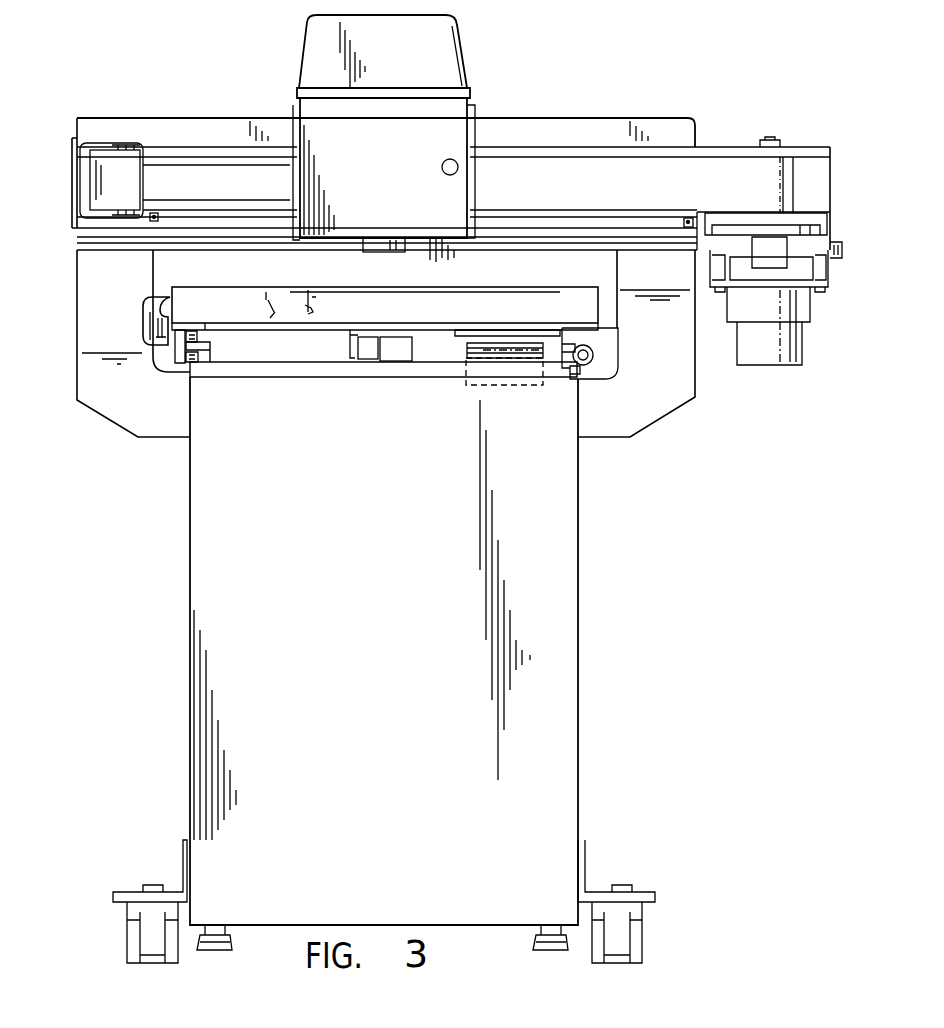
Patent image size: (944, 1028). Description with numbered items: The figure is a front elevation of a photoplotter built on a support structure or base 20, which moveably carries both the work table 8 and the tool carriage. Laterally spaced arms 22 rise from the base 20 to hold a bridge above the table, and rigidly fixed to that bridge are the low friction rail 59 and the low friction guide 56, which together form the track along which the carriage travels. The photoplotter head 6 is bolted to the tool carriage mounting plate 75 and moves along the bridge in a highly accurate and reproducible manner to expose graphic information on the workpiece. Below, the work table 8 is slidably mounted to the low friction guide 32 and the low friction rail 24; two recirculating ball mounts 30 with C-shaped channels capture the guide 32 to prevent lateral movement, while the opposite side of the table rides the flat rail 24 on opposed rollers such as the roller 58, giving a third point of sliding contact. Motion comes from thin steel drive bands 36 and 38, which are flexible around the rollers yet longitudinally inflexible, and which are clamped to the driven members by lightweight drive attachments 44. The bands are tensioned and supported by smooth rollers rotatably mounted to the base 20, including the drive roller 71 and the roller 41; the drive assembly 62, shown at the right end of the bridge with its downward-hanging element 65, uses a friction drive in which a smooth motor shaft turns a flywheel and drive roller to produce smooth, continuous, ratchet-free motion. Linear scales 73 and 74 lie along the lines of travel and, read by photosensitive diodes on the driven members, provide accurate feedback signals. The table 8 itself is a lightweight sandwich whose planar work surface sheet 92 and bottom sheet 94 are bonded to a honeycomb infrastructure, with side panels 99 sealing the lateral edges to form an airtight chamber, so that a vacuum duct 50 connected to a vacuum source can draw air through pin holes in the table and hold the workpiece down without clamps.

The photoplotter head 6 is at (320, 48).
The work table 8 is at (524, 302).
The base 20 is at (560, 470).
The arms 22 is at (77, 333).
The low friction rail 24 is at (207, 343).
The recirculating ball mounts 30 is at (605, 345).
The low friction guide 32 is at (594, 355).
The drive band 36 is at (206, 165).
The drive band 38 is at (478, 351).
The roller 41 is at (137, 150).
The drive attachment 44 is at (508, 332).
The vacuum duct 50 is at (150, 302).
The low friction guide 56 is at (638, 238).
The roller 58 is at (197, 362).
The low friction rail 59 is at (569, 130).
The drive assembly 62 is at (850, 278).
The motor 65 is at (788, 335).
The drive roller 71 is at (769, 217).
The linear scale 73 is at (395, 337).
The linear scale 74 is at (547, 220).
The tool carriage mounting plate 75 is at (465, 254).
The sheet 92 is at (262, 287).
The sheet 94 is at (313, 325).
The side panels 99 is at (273, 310).